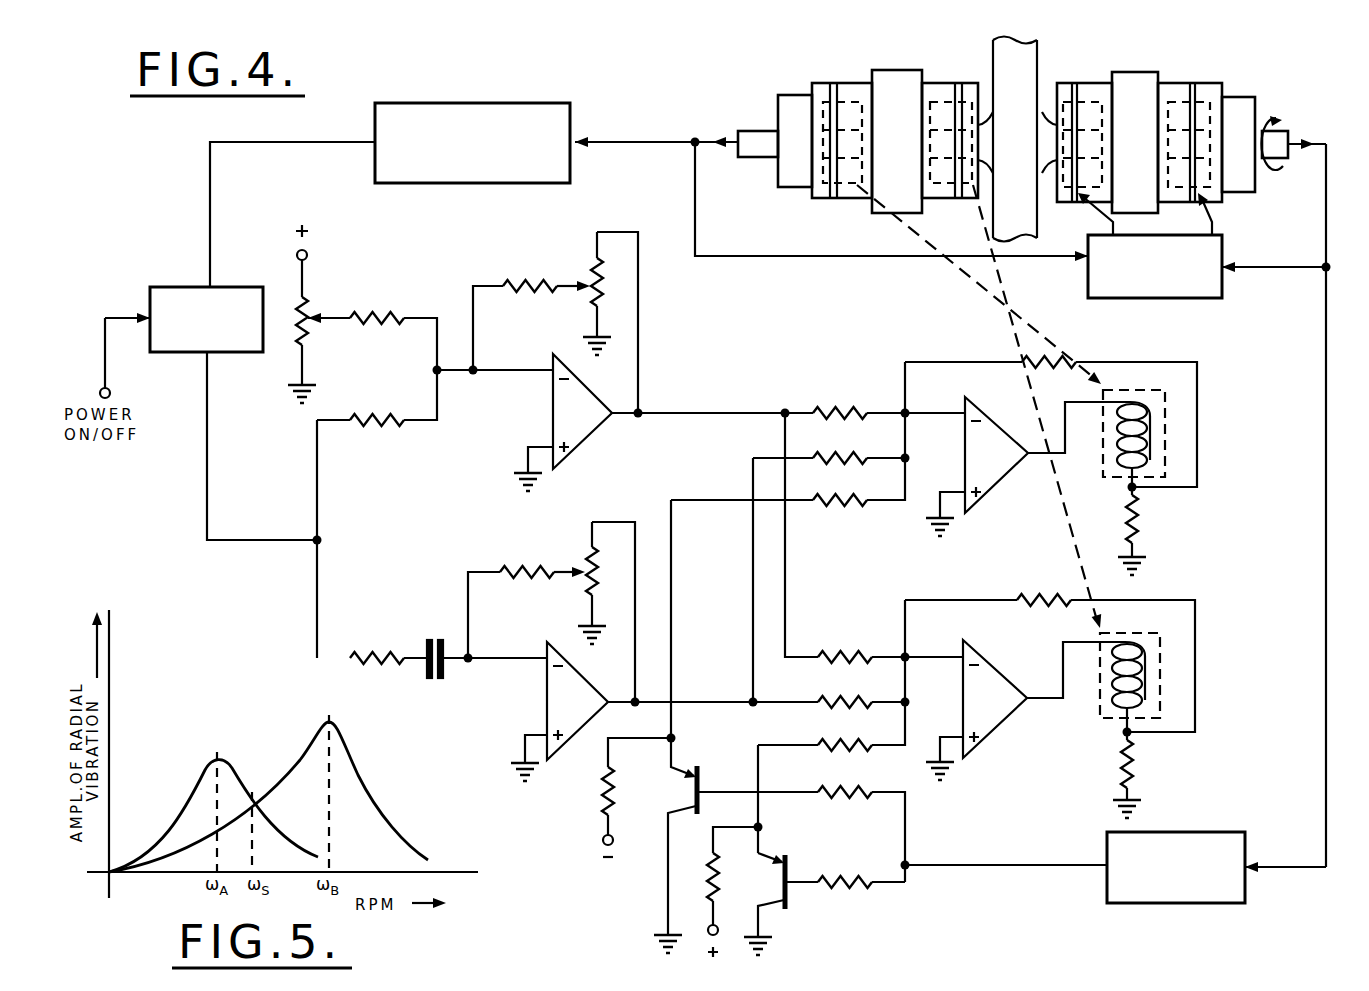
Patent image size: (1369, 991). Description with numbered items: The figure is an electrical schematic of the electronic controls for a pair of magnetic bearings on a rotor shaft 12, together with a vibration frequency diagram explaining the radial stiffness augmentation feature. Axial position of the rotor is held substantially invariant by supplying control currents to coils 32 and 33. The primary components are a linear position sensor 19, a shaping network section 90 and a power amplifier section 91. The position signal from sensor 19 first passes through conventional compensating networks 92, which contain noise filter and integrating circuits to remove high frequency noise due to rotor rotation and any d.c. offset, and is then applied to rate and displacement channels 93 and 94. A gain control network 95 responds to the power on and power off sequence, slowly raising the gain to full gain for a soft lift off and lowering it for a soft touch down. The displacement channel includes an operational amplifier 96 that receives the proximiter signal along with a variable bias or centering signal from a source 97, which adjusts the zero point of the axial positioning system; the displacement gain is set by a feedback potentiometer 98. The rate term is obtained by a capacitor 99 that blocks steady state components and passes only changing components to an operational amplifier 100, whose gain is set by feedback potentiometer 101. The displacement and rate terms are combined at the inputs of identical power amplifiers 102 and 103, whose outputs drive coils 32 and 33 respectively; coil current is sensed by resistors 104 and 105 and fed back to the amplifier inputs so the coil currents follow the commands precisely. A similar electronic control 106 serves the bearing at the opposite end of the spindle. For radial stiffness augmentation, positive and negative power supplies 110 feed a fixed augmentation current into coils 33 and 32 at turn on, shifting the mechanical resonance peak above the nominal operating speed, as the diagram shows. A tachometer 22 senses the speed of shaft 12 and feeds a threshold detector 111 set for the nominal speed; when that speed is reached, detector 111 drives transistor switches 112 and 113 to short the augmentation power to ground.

The shaft 12 is at (1040, 125).
The position sensor 19 is at (750, 131).
The tachometer 22 is at (1289, 131).
The coil 32 is at (1168, 405).
The coil 33 is at (1162, 648).
The shaping network section 90 is at (406, 550).
The power amplifier section 91 is at (1051, 446).
The compensating networks 92 is at (471, 103).
The rate channel 93 is at (579, 307).
The displacement channel 94 is at (686, 711).
The gain control network 95 is at (183, 287).
The operational amplifier 96 is at (598, 432).
The variable bias source 97 is at (321, 298).
The potentiometer 98 is at (562, 300).
The capacitor 99 is at (417, 640).
The operational amplifier 100 is at (547, 703).
The feedback potentiometer 101 is at (561, 580).
The power amplifier 102 is at (964, 397).
The power amplifier 103 is at (1000, 722).
The resistor 104 is at (1138, 503).
The resistor 105 is at (1133, 750).
The electronic control 106 is at (1207, 298).
The power supplies 110 is at (690, 877).
The threshold detector 111 is at (1105, 903).
The transistor switch 112 is at (736, 838).
The transistor switch 113 is at (866, 945).